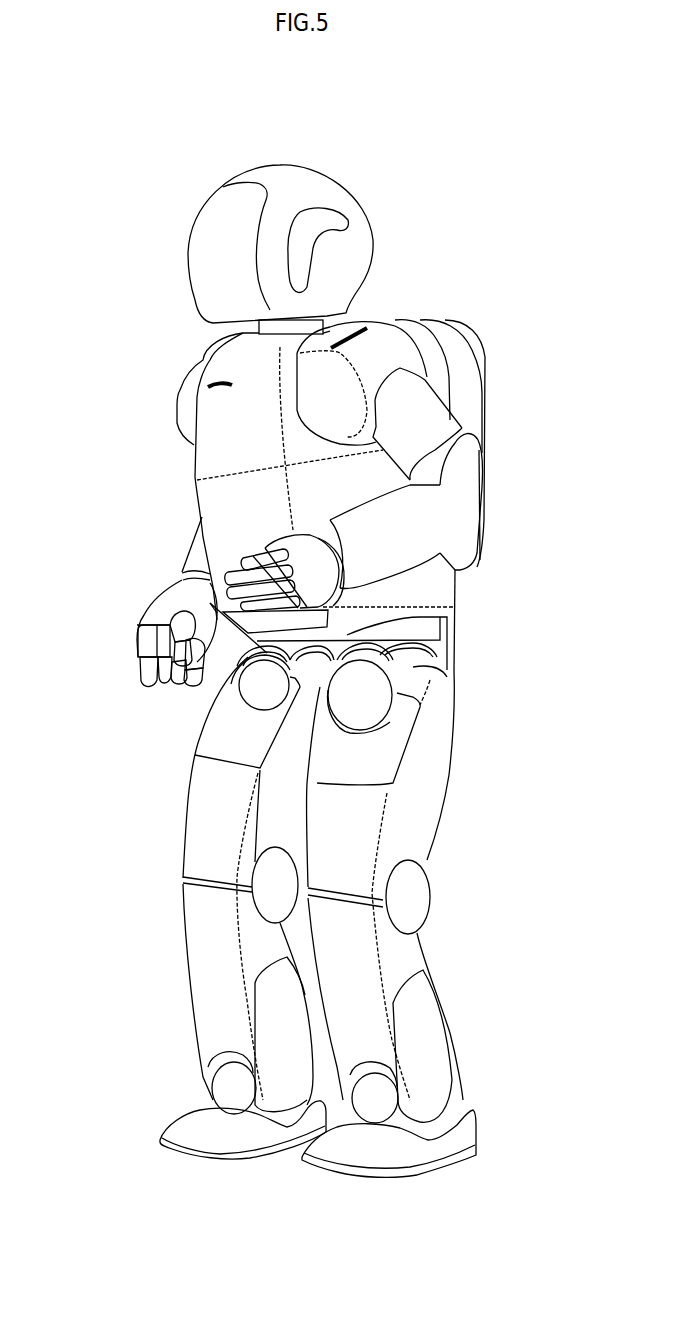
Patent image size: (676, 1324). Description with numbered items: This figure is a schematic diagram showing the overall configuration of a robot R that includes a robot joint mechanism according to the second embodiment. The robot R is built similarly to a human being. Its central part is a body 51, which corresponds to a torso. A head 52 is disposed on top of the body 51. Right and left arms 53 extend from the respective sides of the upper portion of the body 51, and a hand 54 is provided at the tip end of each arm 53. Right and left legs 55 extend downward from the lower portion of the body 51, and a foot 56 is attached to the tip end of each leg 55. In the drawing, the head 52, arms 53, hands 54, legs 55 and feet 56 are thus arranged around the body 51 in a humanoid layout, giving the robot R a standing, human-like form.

The robot R is at (108, 120).
The body 51 is at (222, 507).
The head 52 is at (354, 168).
The arm 53 is at (498, 457).
The hand 54 is at (304, 522).
The leg 55 is at (171, 817).
The foot 56 is at (164, 1110).